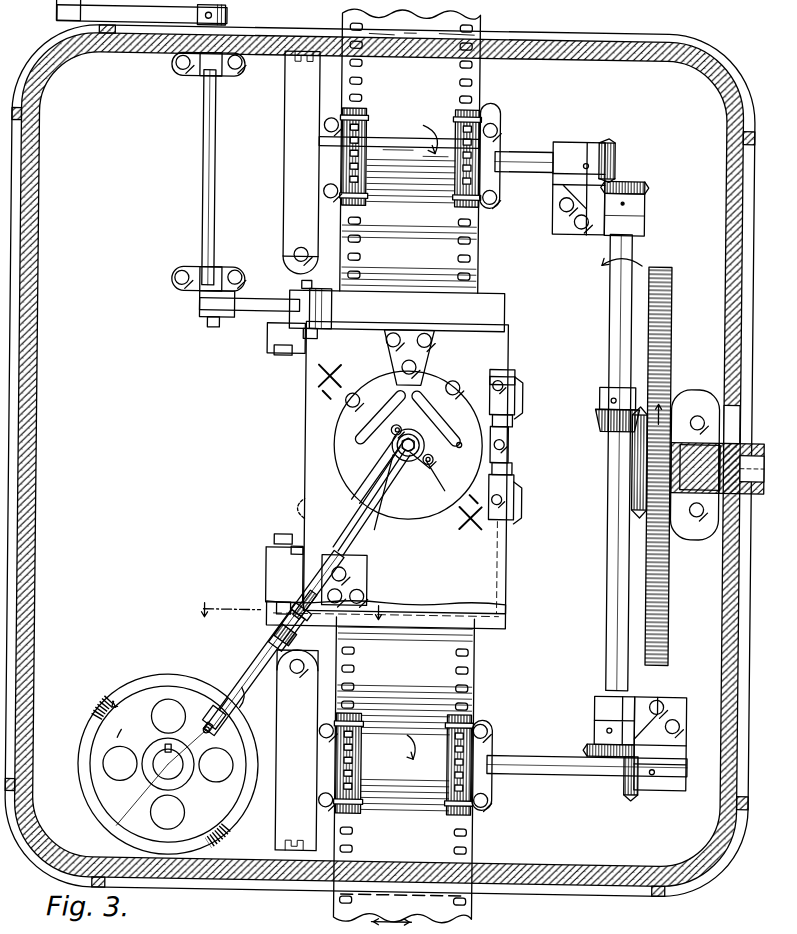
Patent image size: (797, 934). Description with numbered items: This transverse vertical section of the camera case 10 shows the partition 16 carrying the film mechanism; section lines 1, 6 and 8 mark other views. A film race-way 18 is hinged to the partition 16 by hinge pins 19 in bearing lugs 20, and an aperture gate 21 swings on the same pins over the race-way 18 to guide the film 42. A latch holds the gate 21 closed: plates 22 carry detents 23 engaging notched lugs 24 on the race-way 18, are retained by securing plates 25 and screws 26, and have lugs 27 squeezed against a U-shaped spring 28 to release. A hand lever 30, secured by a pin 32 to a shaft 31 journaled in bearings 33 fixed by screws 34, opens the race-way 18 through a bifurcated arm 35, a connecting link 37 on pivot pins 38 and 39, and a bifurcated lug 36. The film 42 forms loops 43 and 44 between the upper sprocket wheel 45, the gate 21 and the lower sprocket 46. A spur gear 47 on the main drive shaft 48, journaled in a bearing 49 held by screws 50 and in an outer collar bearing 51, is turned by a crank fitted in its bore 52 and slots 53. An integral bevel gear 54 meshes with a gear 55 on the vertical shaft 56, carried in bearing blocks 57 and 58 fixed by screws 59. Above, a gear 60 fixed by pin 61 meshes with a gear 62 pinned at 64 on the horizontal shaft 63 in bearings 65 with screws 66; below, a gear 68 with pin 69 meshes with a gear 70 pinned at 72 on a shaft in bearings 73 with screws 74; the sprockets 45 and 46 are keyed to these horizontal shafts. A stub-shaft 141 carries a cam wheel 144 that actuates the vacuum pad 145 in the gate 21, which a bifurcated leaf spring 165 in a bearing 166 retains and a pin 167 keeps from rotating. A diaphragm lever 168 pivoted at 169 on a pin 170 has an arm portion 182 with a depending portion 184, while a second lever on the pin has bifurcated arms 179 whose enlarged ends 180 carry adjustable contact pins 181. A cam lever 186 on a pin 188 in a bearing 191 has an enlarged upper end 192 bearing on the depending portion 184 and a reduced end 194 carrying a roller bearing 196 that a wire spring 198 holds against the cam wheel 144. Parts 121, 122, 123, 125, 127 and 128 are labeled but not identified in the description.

The section line 1 is at (391, 926).
The section line 6 is at (395, 449).
The section line 8 is at (290, 612).
The case 10 is at (728, 178).
The partition 16 is at (702, 226).
The film race-way 18 is at (510, 284).
The hinge pins 19 is at (282, 358).
The bearing lugs 20 is at (300, 284).
The aperture gate 21 is at (500, 568).
The plates 22 is at (520, 395).
The detents 23 is at (514, 386).
The lugs 24 is at (516, 376).
The securing plates 25 is at (501, 444).
The screws 26 is at (670, 270).
The upwardly extending lug 27 is at (512, 418).
The flat U-shaped spring 28 is at (508, 450).
The hand lever 30 is at (60, 10).
The shaft 31 is at (200, 182).
The pin 32 is at (222, 18).
The bearings 33 is at (195, 72).
The screws 34 is at (174, 72).
The bifurcated arm 35 is at (202, 318).
The bifurcated lug 36 is at (320, 299).
The connecting link 37 is at (246, 314).
The pivot pin 38 is at (210, 331).
The pivot pin 39 is at (312, 335).
The film 42 is at (406, 466).
The loop 43 is at (409, 218).
The loop 44 is at (405, 719).
The upper sprocket wheel 45 is at (405, 124).
The sprocket 46 is at (450, 757).
The spur gear 47 is at (672, 322).
The main drive shaft 48 is at (710, 490).
The bearing 49 is at (680, 400).
The screws 50 is at (698, 410).
The collar bearing 51 is at (740, 400).
The bore 52 is at (748, 550).
The slots 53 is at (766, 440).
The bevel gear 54 is at (632, 488).
The bevel gear 55 is at (600, 420).
The vertically disposed shaft 56 is at (612, 322).
The bearing block 57 is at (560, 140).
The bearing block 58 is at (700, 796).
The screws 59 is at (580, 228).
The beveled gear 60 is at (642, 184).
The pin 61 is at (643, 198).
The bevel gear 62 is at (606, 142).
The horizontally disposed shaft 63 is at (522, 150).
The pin 64 is at (583, 160).
The bearings 65 is at (330, 162).
The screws 66 is at (322, 124).
The beveled gear 68 is at (592, 746).
The pin 69 is at (610, 727).
The bevel gear 70 is at (635, 795).
The pin 72 is at (656, 774).
The bearings 73 is at (505, 758).
The screws 74 is at (322, 730).
The bracket 121 is at (365, 566).
The screw 122 is at (366, 598).
The link 123 is at (434, 478).
The pivot 125 is at (418, 440).
The arm 127 is at (372, 520).
The spring 128 is at (305, 516).
The stub-shaft 141 is at (168, 744).
The cam wheel 144 is at (104, 712).
The vacuum pad 145 is at (336, 440).
The bifurcated leaf spring 165 is at (395, 400).
The bearing 166 is at (440, 370).
The small pin 167 is at (459, 440).
The diaphragm lever 168 is at (392, 496).
The pivot 169 is at (360, 500).
The pin 170 is at (362, 505).
The arms 179 is at (366, 470).
The enlarged ends 180 is at (397, 425).
The adjustable contact pins 181 is at (423, 436).
The arm portion 182 is at (292, 553).
The depending portion 184 is at (268, 630).
The cam lever 186 is at (232, 700).
The pin 188 is at (270, 655).
The bearing 191 is at (250, 686).
The enlarged upper end 192 is at (385, 613).
The reduced portion 194 is at (207, 722).
The anti-friction roller bearings 196 is at (212, 735).
The wire spring 198 is at (218, 698).